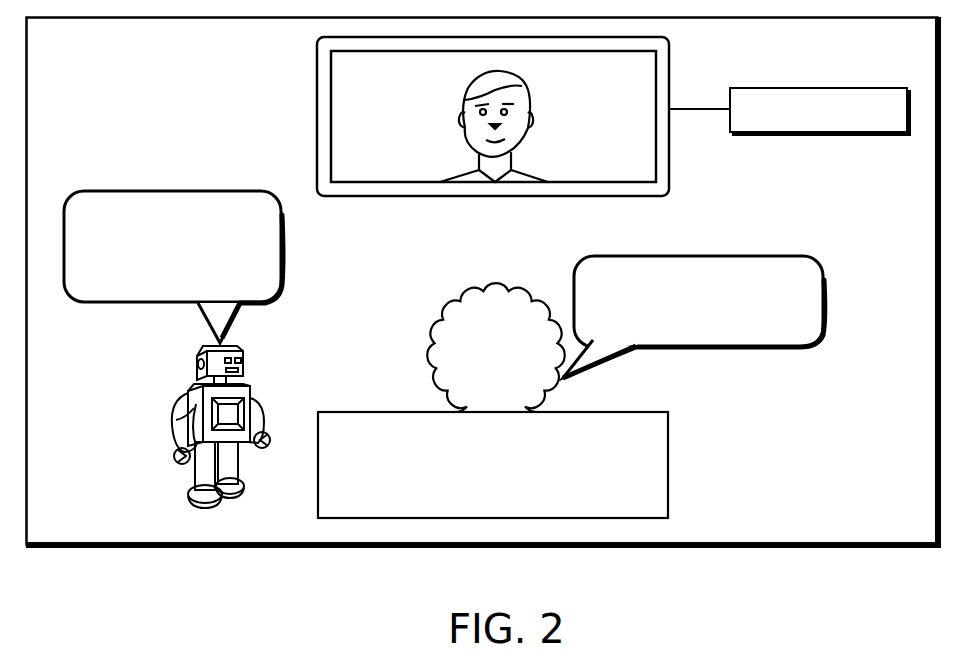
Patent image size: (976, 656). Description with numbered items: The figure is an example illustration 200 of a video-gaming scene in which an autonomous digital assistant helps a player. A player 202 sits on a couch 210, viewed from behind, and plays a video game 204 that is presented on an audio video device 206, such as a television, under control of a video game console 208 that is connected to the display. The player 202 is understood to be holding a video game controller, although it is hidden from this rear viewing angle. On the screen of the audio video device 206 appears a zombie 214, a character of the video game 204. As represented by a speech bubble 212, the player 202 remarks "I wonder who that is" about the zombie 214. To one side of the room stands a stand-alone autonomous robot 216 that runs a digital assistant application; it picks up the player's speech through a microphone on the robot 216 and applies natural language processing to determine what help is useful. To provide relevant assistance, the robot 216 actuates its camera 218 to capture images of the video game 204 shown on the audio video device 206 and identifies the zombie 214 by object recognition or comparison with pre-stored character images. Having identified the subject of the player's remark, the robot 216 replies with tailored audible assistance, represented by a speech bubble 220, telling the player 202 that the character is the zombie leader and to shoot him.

The example illustration 200 is at (258, 548).
The player 202 is at (437, 368).
The video game 204 is at (622, 128).
The audio video device (AVD) 206 is at (317, 106).
The video game console 208 is at (820, 136).
The couch 210 is at (512, 478).
The speech bubble 212 is at (826, 300).
The zombie 214 is at (460, 124).
The stand-alone autonomous robot 216 is at (173, 428).
The camera 218 is at (197, 358).
The speech bubble 220 is at (284, 245).